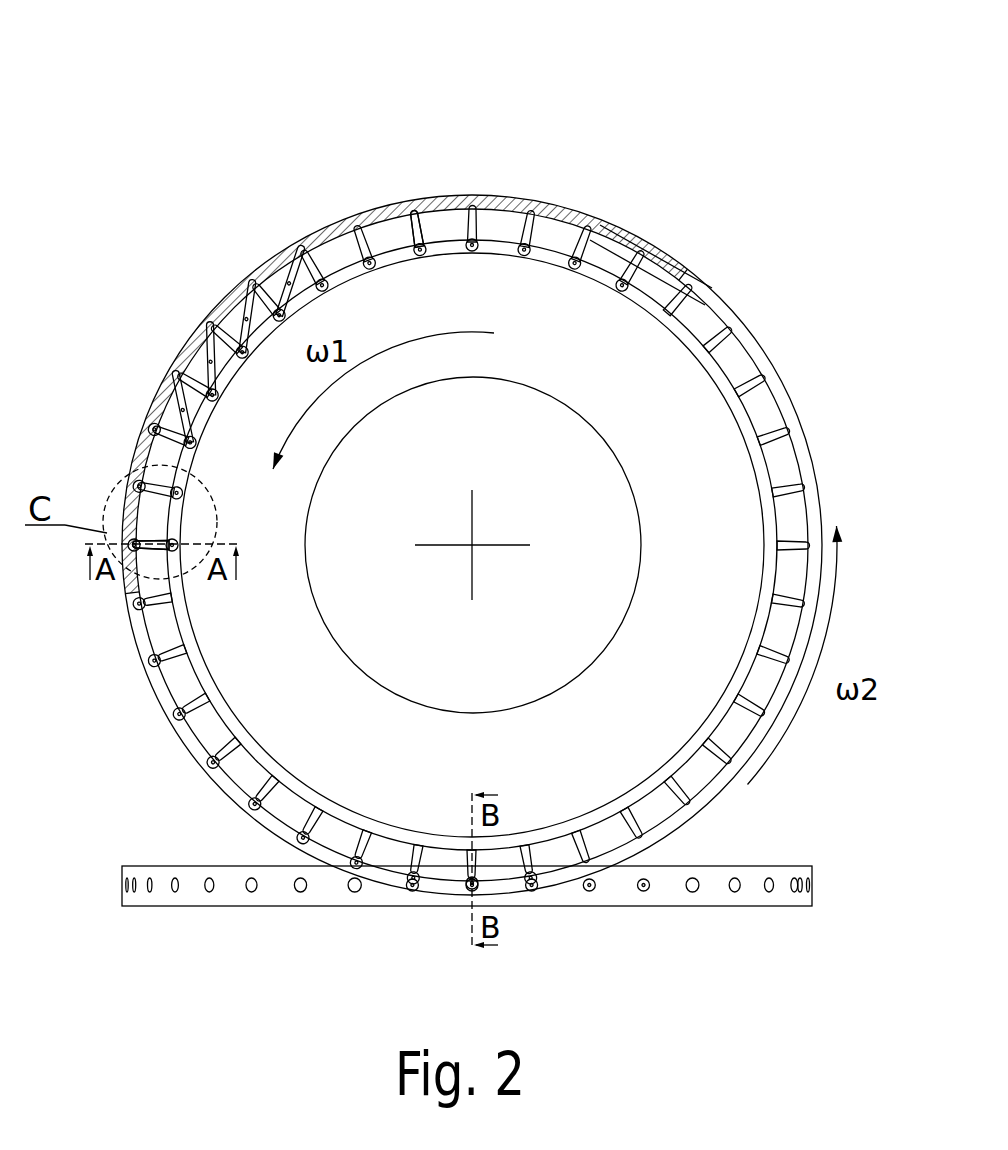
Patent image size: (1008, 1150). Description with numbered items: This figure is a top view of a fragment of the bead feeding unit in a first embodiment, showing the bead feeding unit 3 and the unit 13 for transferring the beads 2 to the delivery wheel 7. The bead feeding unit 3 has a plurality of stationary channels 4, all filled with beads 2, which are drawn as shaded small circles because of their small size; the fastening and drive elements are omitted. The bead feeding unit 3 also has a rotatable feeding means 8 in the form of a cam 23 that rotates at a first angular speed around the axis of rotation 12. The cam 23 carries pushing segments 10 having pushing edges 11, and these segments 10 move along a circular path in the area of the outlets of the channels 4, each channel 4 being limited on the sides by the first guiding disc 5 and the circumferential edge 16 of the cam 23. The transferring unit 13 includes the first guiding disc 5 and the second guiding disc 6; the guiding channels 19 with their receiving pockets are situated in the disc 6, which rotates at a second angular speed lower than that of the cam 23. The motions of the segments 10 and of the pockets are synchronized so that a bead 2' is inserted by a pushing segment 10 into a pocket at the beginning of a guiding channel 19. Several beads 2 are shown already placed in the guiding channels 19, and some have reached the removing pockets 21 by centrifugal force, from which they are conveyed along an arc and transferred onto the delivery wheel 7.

The bead 2 is at (97, 494).
The bead being transferred 2' is at (165, 353).
The bead feeding unit 3 is at (275, 185).
The channel 4 is at (526, 250).
The first guiding disc 5 is at (745, 345).
The second guiding disc 6 is at (385, 210).
The delivery wheel 7 is at (240, 900).
The rotatable feeding means 8 is at (235, 655).
The pushing segment 10 is at (623, 290).
The pushing edge 11 is at (640, 300).
The axis of rotation 12 is at (472, 545).
The transferring unit 13 is at (175, 268).
The circumferential edge of the cam 16 is at (348, 217).
The guiding channel 19 is at (301, 249).
The removing pocket 21 is at (358, 268).
The cam 23 is at (647, 738).